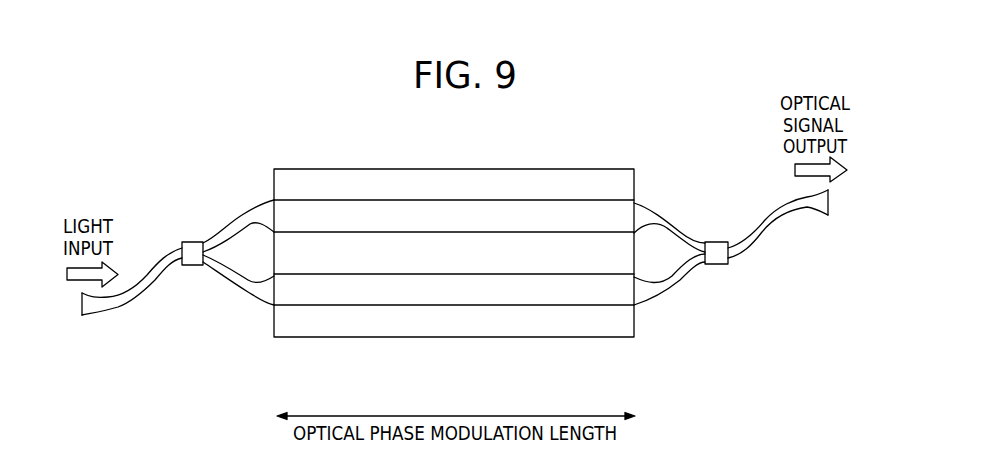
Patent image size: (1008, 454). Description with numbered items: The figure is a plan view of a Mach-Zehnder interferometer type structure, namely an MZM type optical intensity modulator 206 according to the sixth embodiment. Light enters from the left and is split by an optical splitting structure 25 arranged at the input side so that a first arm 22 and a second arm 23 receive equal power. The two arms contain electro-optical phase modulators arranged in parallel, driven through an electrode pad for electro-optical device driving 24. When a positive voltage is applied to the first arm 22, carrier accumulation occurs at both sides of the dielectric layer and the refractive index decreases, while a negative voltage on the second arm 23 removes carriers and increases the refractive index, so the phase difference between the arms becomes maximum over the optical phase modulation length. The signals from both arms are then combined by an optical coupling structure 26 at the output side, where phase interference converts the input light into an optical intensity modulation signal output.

The first arm 22 is at (358, 215).
The second arm 23 is at (362, 290).
The electrode pad for electro-optical device driving 24 is at (537, 317).
The optical splitting structure 25 is at (195, 243).
The optical coupling structure 26 is at (717, 258).
The MZM type optical intensity modulator 206 is at (673, 128).